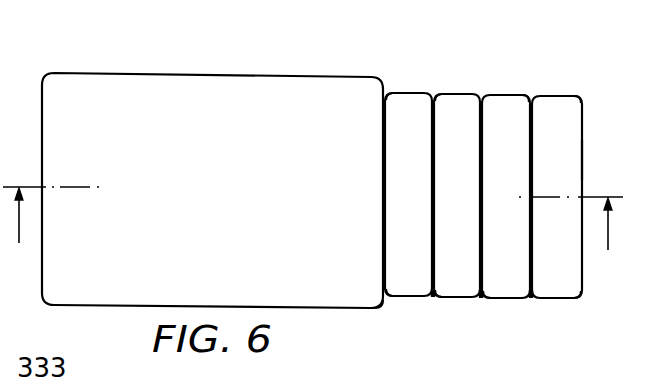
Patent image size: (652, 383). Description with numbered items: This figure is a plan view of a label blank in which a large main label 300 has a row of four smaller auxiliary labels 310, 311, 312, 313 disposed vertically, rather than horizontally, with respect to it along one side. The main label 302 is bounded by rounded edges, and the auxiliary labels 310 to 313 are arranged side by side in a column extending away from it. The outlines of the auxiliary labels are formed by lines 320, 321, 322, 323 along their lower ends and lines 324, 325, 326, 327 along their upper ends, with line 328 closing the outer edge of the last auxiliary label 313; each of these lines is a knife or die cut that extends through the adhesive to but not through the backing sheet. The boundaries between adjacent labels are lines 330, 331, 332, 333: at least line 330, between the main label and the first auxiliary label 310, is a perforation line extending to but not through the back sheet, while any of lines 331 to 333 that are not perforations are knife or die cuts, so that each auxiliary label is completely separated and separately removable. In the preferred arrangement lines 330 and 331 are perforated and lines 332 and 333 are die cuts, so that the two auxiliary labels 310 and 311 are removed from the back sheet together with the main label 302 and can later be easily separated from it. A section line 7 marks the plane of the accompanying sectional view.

The main label 300 is at (247, 57).
The main label 302 is at (80, 73).
The auxiliary label 310 is at (407, 110).
The auxiliary label 311 is at (458, 110).
The auxiliary label 312 is at (498, 110).
The auxiliary label 313 is at (555, 113).
The knife or die cut line 320 is at (405, 297).
The knife or die cut line 321 is at (455, 299).
The knife or die cut line 322 is at (505, 300).
The knife or die cut line 323 is at (567, 300).
The knife or die cut line 324 is at (392, 91).
The knife or die cut line 325 is at (438, 93).
The knife or die cut line 326 is at (527, 96).
The knife or die cut line 327 is at (579, 97).
The knife or die cut line 328 is at (582, 155).
The perforation line 330 is at (386, 306).
The perforation line 331 is at (433, 299).
The die cut line 332 is at (480, 300).
The die cut line 333 is at (533, 300).
The section line 7 is at (313, 234).